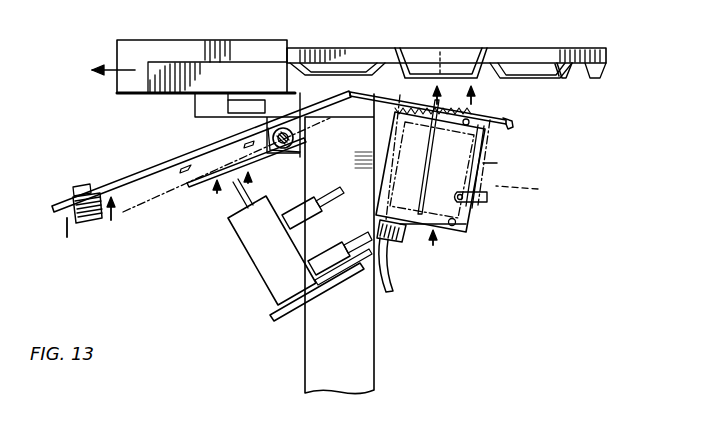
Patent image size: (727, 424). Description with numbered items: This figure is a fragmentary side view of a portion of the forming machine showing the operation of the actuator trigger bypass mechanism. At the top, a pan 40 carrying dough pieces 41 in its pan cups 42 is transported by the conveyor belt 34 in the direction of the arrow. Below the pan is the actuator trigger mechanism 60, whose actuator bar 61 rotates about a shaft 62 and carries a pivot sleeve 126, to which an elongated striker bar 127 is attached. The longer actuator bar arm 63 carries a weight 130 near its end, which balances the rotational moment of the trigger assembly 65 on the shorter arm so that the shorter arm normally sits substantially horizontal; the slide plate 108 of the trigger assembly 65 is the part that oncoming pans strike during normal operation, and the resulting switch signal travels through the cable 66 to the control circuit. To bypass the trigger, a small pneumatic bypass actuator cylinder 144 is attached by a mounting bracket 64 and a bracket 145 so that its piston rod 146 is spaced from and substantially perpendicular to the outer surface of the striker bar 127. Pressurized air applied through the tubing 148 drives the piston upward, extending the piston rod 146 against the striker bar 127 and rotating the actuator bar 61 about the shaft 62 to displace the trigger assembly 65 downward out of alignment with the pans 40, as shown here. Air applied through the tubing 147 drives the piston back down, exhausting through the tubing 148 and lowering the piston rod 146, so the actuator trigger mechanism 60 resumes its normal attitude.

The conveyor belt 34 is at (178, 78).
The pan 40 is at (607, 63).
The dough pieces 41 is at (458, 48).
The pan cups 42 is at (560, 77).
The actuator trigger mechanism 60 is at (486, 113).
The actuator bar 61 is at (288, 112).
The shaft 62 is at (296, 138).
The longer actuator bar arm 63 is at (121, 181).
The mounting bracket 64 is at (376, 334).
The trigger assembly 65 is at (445, 258).
The cable 66 is at (392, 280).
The slide plate 108 is at (510, 126).
The pivot sleeve 126 is at (290, 153).
The striker bar 127 is at (200, 184).
The weight 130 is at (92, 220).
The bypass actuator cylinder 144 is at (267, 281).
The bracket 145 is at (294, 318).
The piston rod 146 is at (236, 190).
The tubing 147 is at (317, 195).
The tubing 148 is at (338, 241).